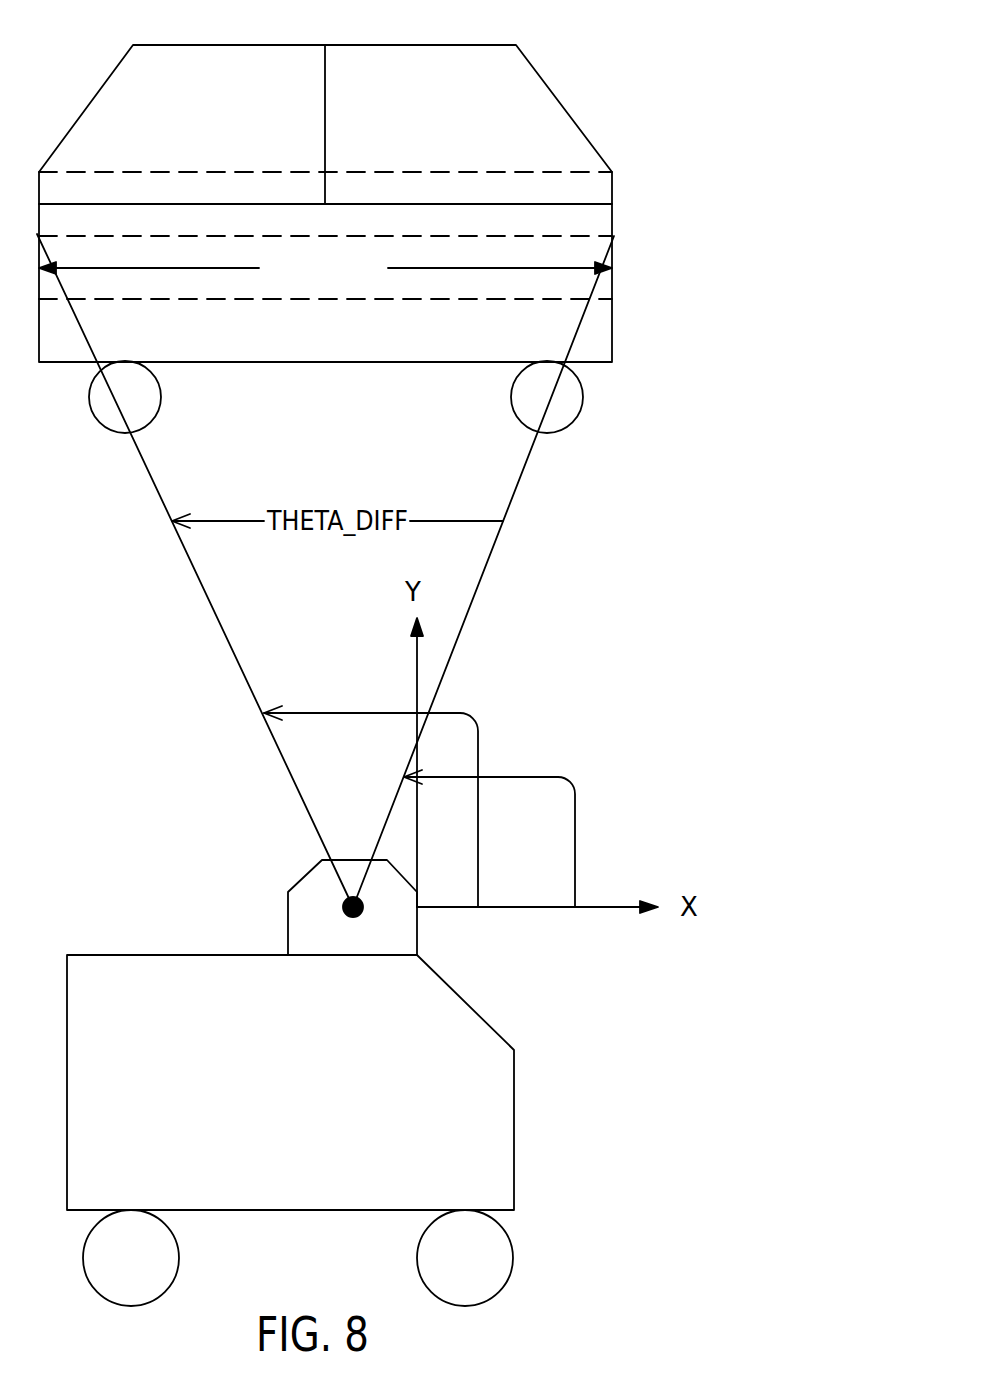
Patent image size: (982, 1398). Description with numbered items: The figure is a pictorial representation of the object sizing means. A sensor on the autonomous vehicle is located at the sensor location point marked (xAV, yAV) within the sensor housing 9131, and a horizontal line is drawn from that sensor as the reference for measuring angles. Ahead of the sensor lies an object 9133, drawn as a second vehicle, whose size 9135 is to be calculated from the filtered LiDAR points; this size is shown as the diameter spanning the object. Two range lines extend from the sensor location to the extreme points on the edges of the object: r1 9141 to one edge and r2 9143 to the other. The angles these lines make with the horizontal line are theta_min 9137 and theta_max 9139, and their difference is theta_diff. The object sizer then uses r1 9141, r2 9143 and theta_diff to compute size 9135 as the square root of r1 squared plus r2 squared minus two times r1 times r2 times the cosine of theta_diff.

The sensor of autonomous vehicle 9131 is at (288, 933).
The object 9133 is at (110, 75).
The size 9135 is at (195, 267).
The theta_min 9137 is at (740, 810).
The theta_max 9139 is at (645, 727).
The r1 9141 is at (527, 617).
The r2 9143 is at (160, 618).